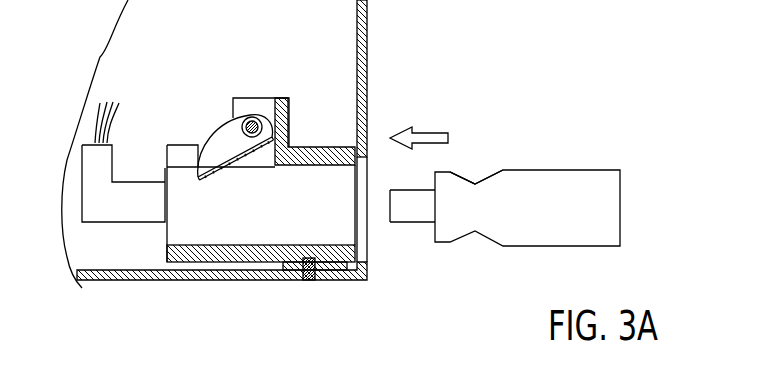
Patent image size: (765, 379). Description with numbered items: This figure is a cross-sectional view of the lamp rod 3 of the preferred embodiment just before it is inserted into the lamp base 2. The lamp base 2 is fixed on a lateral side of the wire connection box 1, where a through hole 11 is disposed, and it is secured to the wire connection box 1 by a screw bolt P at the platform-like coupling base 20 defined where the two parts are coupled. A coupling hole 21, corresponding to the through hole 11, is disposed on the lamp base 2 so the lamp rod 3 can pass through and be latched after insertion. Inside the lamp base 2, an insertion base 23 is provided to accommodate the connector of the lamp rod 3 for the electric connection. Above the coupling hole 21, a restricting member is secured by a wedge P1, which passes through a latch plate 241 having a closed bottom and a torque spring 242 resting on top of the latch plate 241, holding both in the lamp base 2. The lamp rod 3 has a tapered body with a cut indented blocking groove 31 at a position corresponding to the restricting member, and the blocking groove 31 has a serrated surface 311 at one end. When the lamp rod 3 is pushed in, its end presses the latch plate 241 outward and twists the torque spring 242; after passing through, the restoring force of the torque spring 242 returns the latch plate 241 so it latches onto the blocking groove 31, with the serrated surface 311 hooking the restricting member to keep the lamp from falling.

The wire connection box 1 is at (367, 77).
The through hole 11 is at (358, 238).
The lamp base 2 is at (330, 147).
The coupling hole 21 is at (338, 188).
The coupling base 20 is at (293, 273).
The screw bolt P is at (312, 280).
The insertion base 23 is at (117, 212).
The wedge P1 is at (237, 110).
The latch plate 241 is at (213, 140).
The torque spring 242 is at (265, 115).
The lamp rod 3 is at (562, 180).
The blocking groove 31 is at (475, 183).
The serrated surface 311 is at (463, 177).